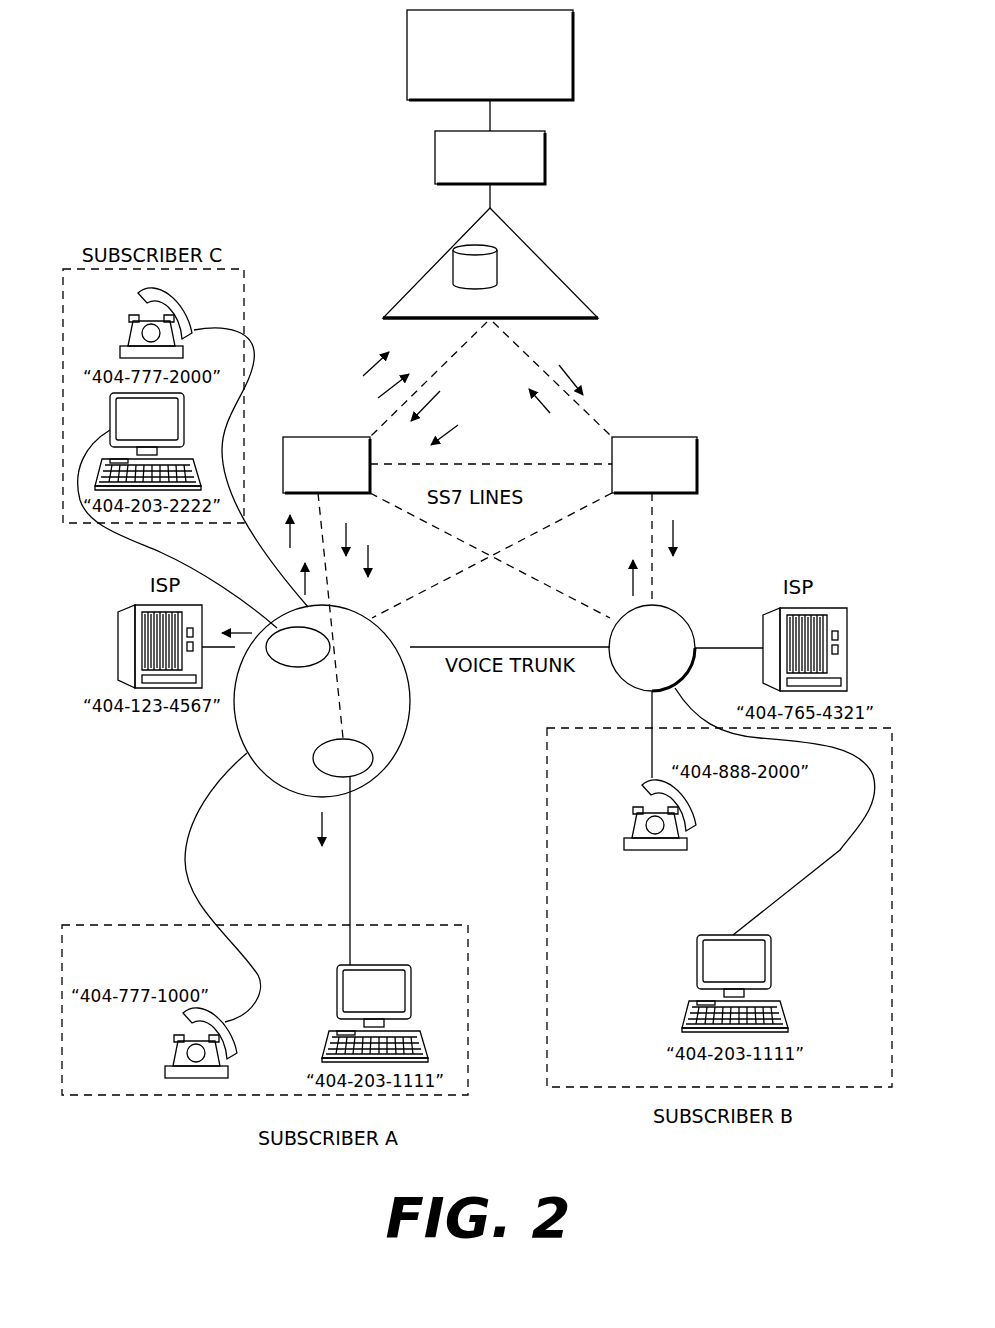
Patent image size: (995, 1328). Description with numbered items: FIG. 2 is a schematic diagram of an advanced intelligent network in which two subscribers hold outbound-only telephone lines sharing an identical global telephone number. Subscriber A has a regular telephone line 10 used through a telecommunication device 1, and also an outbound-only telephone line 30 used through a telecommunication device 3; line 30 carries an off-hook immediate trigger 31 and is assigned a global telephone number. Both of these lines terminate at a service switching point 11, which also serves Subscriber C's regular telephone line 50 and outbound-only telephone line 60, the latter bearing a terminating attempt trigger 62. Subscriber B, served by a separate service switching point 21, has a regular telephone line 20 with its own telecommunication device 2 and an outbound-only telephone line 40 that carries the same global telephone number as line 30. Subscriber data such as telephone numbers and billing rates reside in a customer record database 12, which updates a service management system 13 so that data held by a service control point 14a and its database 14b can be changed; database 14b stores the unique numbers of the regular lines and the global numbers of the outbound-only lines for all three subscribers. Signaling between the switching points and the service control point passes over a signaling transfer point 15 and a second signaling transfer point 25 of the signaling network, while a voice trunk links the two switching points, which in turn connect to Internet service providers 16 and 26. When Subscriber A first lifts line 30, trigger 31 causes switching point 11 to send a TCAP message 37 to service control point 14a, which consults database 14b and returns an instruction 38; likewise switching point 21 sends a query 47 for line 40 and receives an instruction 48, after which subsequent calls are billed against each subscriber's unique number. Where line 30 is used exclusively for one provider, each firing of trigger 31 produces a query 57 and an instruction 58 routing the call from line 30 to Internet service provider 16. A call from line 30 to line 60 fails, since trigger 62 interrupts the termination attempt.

The telecommunication device 1 is at (240, 1051).
The telephone of subscriber B 2 is at (638, 785).
The telecommunication device 3 is at (337, 995).
The regular telephone line 10 is at (258, 977).
The service switching point 11 is at (386, 617).
The customer record database 12 is at (574, 48).
The service management system 13 is at (546, 152).
The service control point 14a is at (566, 276).
The database 14b is at (497, 263).
The signaling transfer point 15 is at (318, 437).
The Internet service provider 16 is at (118, 638).
The regular telephone line 20 is at (652, 747).
The service switching point 21 is at (683, 612).
The signal transfer point (STP) 25 is at (698, 462).
The Internet service provider 26 is at (850, 603).
The outbound-only telephone line 30 is at (350, 946).
The off-hook immediate trigger 31 is at (313, 762).
The TCAP message 37 is at (378, 395).
The instruction 38 is at (437, 394).
The outbound-only telephone line 40 is at (867, 805).
The query 47 is at (547, 412).
The instruction 48 is at (562, 370).
The regular telephone line 50 is at (245, 313).
The query 57 is at (364, 373).
The instruction 58 is at (458, 427).
The outbound-only telephone line 60 is at (83, 461).
The terminating attempt trigger 62 is at (299, 667).